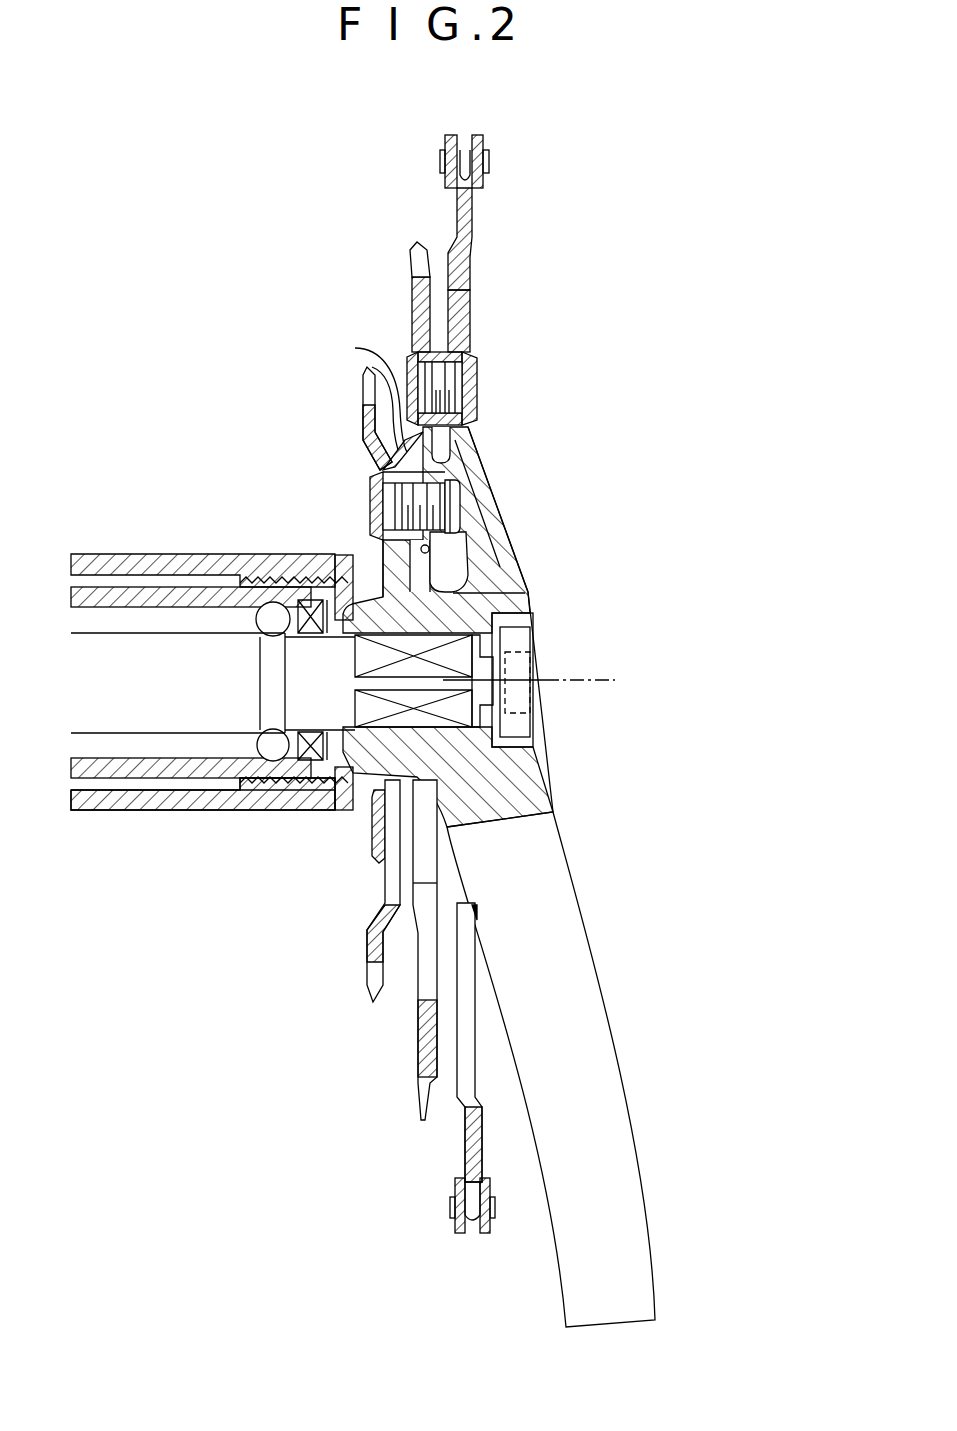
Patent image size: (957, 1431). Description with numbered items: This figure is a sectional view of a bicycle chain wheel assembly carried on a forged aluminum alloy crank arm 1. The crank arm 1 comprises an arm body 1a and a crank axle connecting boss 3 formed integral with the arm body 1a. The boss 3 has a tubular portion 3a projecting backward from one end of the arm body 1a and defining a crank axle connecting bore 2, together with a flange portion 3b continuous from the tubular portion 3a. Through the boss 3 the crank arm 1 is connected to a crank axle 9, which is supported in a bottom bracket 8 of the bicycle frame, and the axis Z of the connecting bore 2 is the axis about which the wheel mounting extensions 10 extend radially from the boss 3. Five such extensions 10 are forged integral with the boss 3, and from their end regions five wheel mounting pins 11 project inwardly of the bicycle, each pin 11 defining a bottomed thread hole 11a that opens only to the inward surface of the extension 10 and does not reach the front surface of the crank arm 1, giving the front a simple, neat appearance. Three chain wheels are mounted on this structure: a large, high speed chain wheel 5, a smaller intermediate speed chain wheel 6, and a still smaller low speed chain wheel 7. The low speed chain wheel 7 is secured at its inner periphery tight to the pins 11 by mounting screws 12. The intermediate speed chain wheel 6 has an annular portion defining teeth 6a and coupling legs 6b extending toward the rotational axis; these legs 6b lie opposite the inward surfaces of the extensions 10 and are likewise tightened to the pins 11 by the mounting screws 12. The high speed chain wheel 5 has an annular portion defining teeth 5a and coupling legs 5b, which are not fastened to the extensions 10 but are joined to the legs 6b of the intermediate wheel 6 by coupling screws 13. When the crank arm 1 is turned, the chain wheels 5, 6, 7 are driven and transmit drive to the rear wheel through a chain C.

The bicycle crank arm 1 is at (557, 959).
The arm body 1a is at (582, 958).
The crank axle connecting bore 2 is at (513, 650).
The crank axle connecting boss 3 is at (462, 653).
The tubular portion 3a is at (364, 795).
The flange portion 3b is at (503, 564).
The high speed chain wheel 5 is at (479, 685).
The teeth 5a is at (463, 162).
The coupling legs 5b is at (468, 310).
The intermediate speed chain wheel 6 is at (379, 665).
The teeth 6a is at (412, 255).
The coupling legs 6b is at (362, 390).
The low speed chain wheel 7 is at (362, 427).
The bottom bracket 8 is at (178, 555).
The crank axle 9 is at (80, 680).
The wheel mounting extensions 10 is at (467, 467).
The wheel mounting pins 11 is at (430, 554).
The bottomed thread hole 11a is at (458, 502).
The mounting screws 12 is at (370, 503).
The coupling screws 13 is at (472, 390).
The chain C is at (445, 148).
The axis Z is at (591, 681).